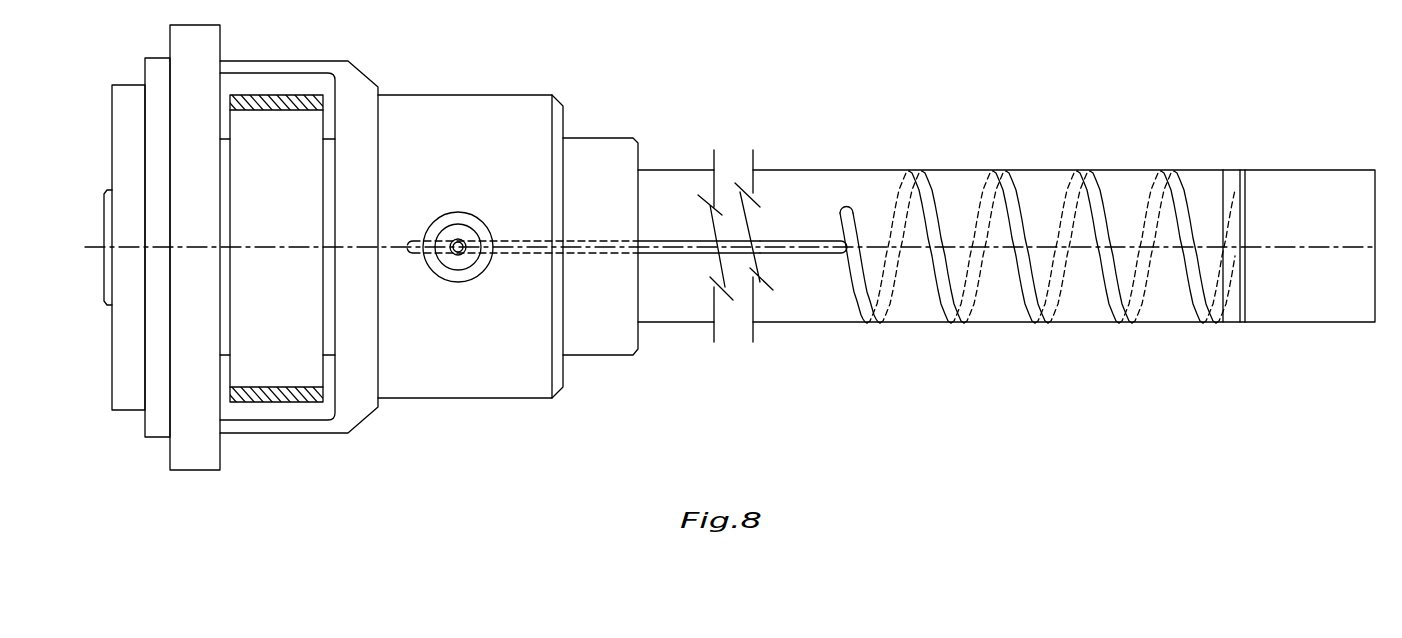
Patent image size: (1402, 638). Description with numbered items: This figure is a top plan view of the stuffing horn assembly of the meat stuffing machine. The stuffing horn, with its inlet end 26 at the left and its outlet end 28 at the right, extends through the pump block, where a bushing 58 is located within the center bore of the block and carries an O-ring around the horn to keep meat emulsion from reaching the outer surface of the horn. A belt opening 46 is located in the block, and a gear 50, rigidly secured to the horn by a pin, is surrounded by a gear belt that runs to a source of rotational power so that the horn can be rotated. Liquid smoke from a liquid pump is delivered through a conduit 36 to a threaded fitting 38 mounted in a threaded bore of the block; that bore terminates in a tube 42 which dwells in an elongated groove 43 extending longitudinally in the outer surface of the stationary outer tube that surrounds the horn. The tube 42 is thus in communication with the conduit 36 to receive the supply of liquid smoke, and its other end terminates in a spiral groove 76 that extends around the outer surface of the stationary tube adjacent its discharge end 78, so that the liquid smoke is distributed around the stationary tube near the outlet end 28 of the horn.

The inlet end of stuffing horn 26 is at (104, 276).
The outlet end of stuffing horn 28 is at (1376, 277).
The conduit 36 is at (470, 232).
The threaded fitting 38 is at (482, 265).
The tube 42 is at (785, 246).
The elongated groove 43 is at (773, 239).
The belt opening 46 is at (313, 158).
The gear 50 is at (273, 401).
The bushing 58 is at (143, 72).
The spiral groove 76 is at (1148, 208).
The discharge end 78 is at (1247, 183).